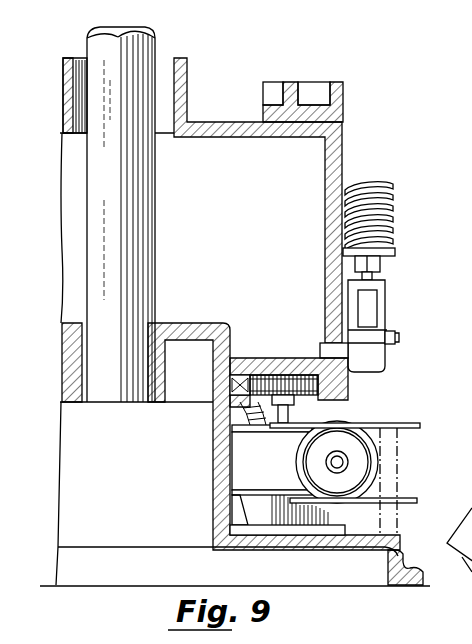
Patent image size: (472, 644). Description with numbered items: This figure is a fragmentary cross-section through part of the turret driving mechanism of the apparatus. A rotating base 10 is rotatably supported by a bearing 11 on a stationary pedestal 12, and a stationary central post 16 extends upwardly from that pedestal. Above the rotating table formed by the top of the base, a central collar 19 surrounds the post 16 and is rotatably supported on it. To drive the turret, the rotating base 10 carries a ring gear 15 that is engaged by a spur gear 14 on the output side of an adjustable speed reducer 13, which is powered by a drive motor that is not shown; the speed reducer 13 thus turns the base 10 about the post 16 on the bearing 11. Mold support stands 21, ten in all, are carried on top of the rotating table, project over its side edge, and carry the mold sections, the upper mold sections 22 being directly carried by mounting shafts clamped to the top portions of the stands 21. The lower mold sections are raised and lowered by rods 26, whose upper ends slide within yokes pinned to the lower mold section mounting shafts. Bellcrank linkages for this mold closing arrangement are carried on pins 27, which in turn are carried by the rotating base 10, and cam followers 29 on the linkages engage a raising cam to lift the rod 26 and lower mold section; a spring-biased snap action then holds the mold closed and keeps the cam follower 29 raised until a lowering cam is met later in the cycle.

The rotating base 10 is at (347, 378).
The bearing 11 is at (240, 362).
The stationary pedestal 12 is at (212, 432).
The adjustable speed reducer 13 is at (250, 471).
The spur gear 14 is at (273, 380).
The ring gear 15 is at (314, 404).
The stationary central post 16 is at (157, 41).
The central collar 19 is at (188, 73).
The mold support stands 21 is at (343, 93).
The rods 26 is at (378, 273).
The pins 27 is at (322, 347).
The cam followers 29 is at (400, 336).
The upper mold sections 22 is at (459, 563).